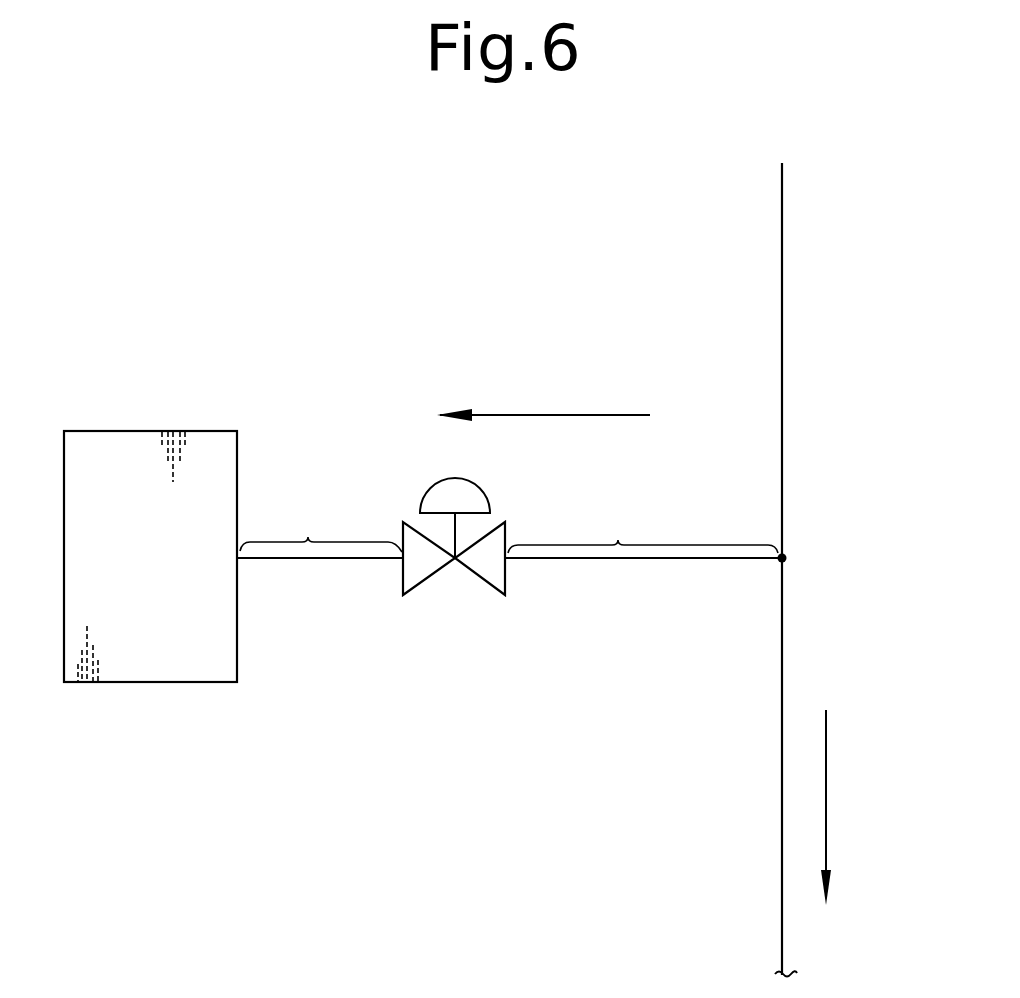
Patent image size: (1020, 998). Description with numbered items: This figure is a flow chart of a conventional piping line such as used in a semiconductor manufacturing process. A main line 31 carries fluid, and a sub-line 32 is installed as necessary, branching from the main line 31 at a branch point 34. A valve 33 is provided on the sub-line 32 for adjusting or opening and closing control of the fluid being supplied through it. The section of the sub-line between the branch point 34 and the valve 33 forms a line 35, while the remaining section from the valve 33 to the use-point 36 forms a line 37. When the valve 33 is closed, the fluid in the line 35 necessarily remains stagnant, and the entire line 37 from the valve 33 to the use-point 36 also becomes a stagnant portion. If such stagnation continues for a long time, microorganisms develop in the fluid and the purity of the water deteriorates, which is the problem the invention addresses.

The main line 31 is at (782, 351).
The sub-line 32 is at (637, 566).
The valve 33 is at (528, 470).
The branch point 34 is at (789, 558).
The line 35 is at (618, 540).
The use-point 36 is at (190, 431).
The line 37 is at (308, 537).